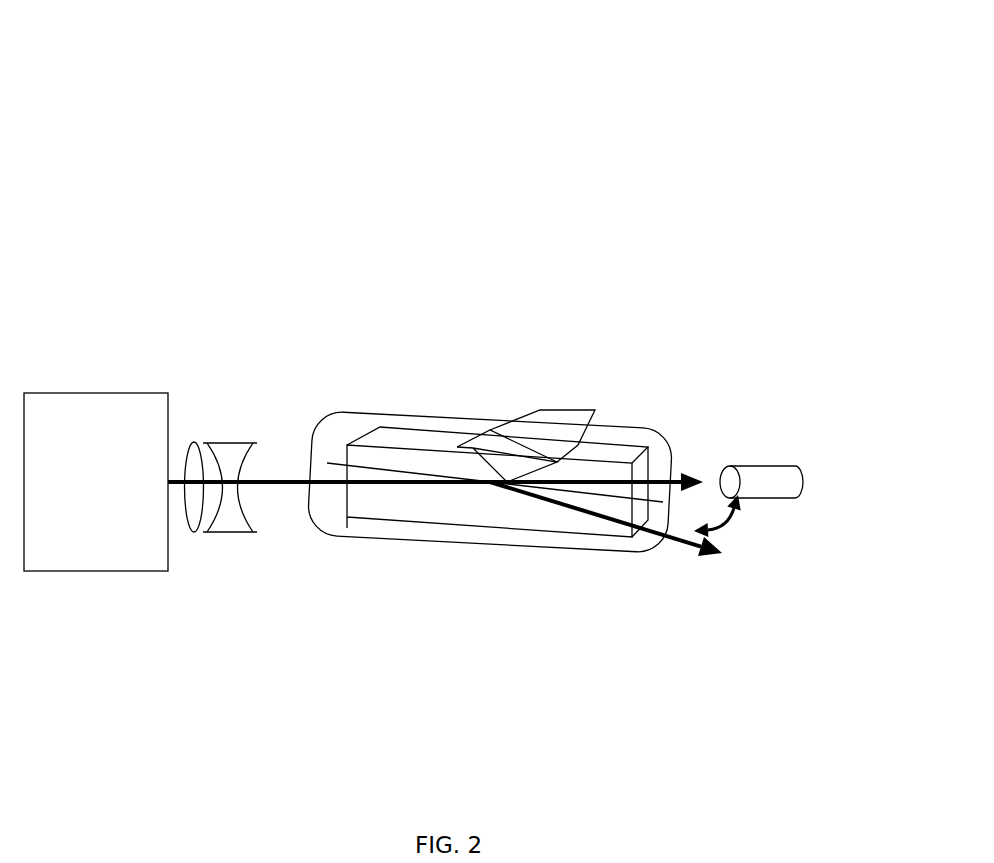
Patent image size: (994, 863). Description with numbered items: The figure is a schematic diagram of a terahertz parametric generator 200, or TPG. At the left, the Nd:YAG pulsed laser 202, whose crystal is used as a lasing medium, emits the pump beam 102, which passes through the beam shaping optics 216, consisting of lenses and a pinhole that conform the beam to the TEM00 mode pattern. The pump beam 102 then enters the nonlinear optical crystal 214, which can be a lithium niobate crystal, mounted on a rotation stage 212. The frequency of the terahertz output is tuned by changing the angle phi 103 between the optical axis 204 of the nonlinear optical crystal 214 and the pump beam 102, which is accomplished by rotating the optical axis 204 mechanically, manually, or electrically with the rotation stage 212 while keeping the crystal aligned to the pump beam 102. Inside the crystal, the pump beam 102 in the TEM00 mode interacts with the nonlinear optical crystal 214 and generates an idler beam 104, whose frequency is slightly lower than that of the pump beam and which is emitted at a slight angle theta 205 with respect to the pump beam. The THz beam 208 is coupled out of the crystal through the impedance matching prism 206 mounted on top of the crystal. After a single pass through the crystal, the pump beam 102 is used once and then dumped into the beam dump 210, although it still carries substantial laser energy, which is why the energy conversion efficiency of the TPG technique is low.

The terahertz parametric generator 200 is at (332, 70).
The Nd:YAG pulsed laser 202 is at (96, 482).
The beam shaping optics 216 is at (252, 594).
The pump beam 102 is at (690, 462).
The angle phi 103 is at (297, 472).
The optical axis 204 is at (330, 465).
The nonlinear optical crystal 214 is at (400, 517).
The rotation stage 212 is at (542, 548).
The impedance matching prism 206 is at (445, 440).
The THz beam 208 is at (560, 403).
The idler beam 104 is at (667, 542).
The beam dump 210 is at (848, 447).
The angle theta 205 is at (705, 512).